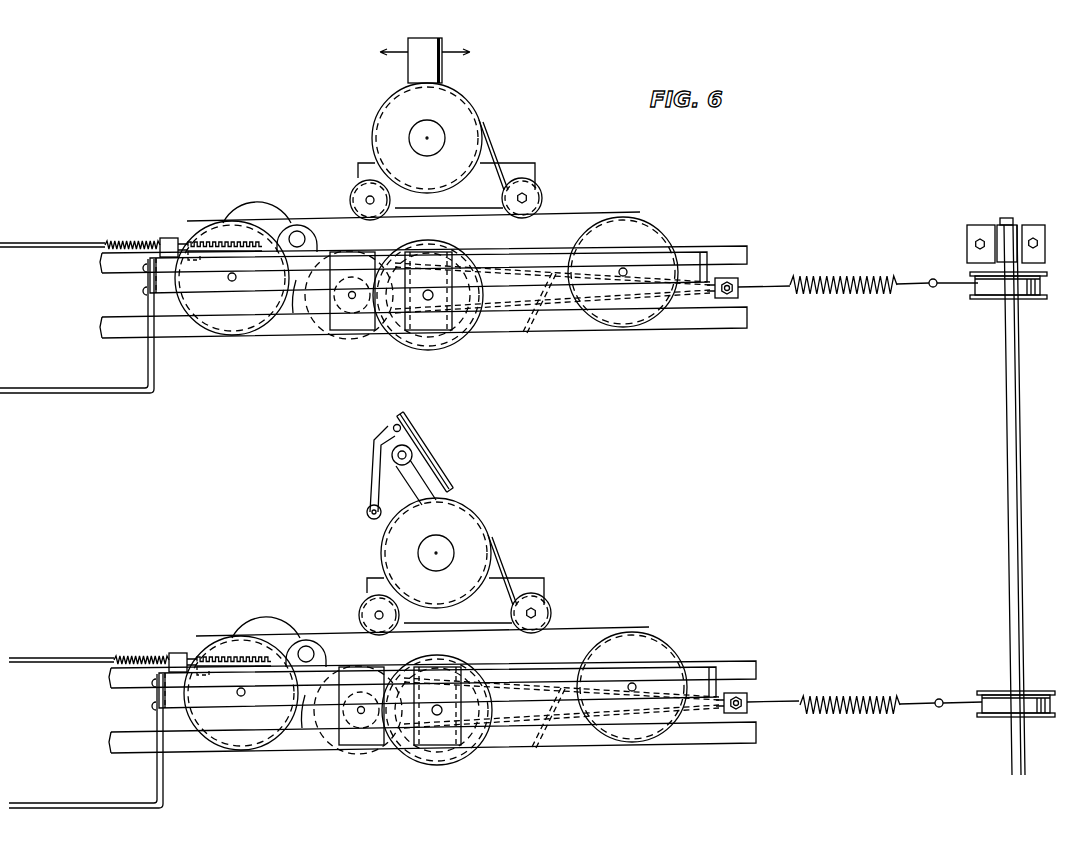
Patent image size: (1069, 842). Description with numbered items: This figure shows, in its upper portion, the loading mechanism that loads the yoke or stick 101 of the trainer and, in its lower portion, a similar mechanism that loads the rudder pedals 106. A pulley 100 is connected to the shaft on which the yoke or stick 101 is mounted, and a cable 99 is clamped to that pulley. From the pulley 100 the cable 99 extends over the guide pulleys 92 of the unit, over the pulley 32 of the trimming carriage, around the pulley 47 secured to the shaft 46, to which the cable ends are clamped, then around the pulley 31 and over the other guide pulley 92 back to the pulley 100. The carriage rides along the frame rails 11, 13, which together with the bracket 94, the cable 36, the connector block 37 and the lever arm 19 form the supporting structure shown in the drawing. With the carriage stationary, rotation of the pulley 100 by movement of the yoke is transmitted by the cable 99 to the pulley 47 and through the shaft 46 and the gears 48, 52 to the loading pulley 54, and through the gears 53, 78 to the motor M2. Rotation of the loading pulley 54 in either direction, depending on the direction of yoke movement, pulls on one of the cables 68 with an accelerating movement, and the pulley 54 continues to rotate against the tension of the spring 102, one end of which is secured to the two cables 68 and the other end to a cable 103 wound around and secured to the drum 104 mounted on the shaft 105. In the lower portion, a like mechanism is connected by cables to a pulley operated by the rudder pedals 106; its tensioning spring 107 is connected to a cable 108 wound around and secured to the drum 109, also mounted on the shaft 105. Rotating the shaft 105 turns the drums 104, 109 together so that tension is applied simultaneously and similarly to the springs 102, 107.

The upper frame rail 11 is at (724, 245).
The lower frame rail 13 is at (731, 318).
The lever arm 19 is at (294, 283).
The pulley 31 is at (227, 316).
The pulley of the trimming carriage 32 is at (621, 317).
The cable 36 is at (88, 243).
The connector block 37 is at (170, 240).
The shaft 46 is at (427, 300).
The pulley 47 is at (438, 322).
The gear 48 is at (450, 337).
The gear 52 is at (350, 307).
The gear 53 is at (328, 344).
The loading pulley 54 is at (354, 330).
The cable 68 is at (536, 316).
The gear 78 is at (306, 223).
The guide pulleys 92 is at (354, 194).
The bracket 94 is at (70, 393).
The cable 99 is at (494, 156).
The pulley 100 is at (465, 111).
The yoke or stick 101 is at (443, 45).
The spring 102 is at (826, 276).
The cable 103 is at (945, 279).
The drum 104 is at (992, 293).
The shaft 105 is at (1010, 637).
The rudder pedals 106 is at (418, 423).
The tensioning spring 107 is at (840, 698).
The cable 108 is at (953, 700).
The drum 109 is at (998, 711).
The motor M2 is at (246, 209).